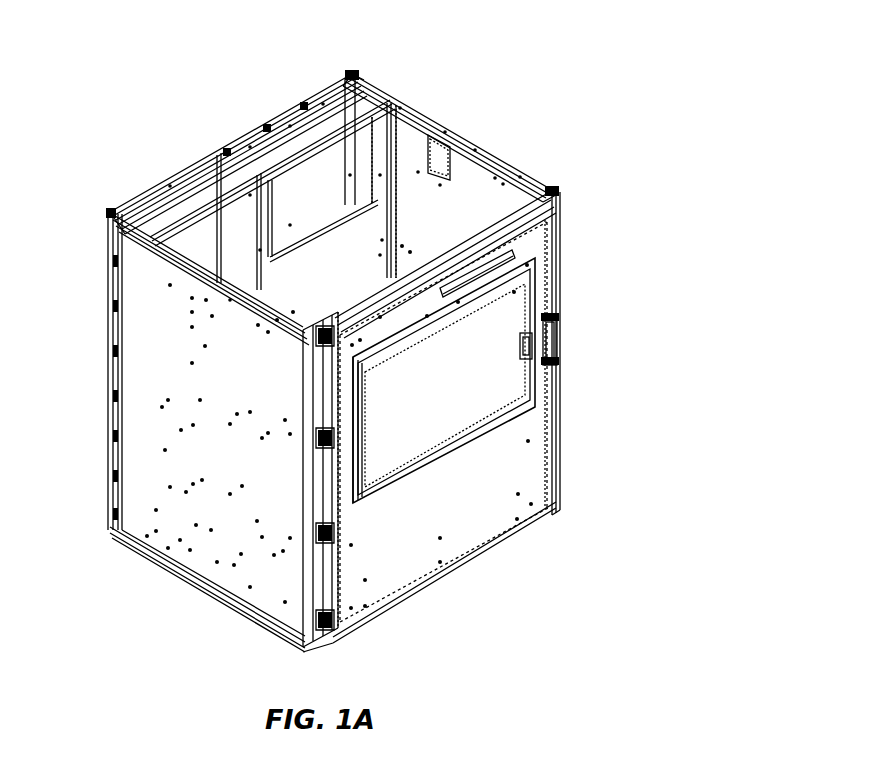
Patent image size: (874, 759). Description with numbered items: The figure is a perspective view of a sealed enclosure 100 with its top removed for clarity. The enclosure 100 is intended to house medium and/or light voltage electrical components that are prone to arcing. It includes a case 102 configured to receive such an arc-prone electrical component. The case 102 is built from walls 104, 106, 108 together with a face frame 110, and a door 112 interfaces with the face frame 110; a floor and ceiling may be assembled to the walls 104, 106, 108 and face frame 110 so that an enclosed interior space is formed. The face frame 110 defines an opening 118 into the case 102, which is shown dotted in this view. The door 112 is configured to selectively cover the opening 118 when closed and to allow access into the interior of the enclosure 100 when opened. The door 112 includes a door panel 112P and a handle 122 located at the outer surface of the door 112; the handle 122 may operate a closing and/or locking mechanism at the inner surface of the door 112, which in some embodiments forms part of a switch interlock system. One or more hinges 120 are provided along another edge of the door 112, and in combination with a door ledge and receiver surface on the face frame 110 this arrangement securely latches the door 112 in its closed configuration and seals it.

The enclosure 100 is at (433, 80).
The case 102 is at (168, 489).
The wall 104 is at (140, 478).
The wall 106 is at (491, 146).
The wall 108 is at (236, 139).
The face frame 110 is at (553, 253).
The door 112 is at (518, 465).
The door panel 112P is at (462, 513).
The opening 118 is at (548, 400).
The hinges 120 is at (328, 440).
The handle 122 is at (560, 346).